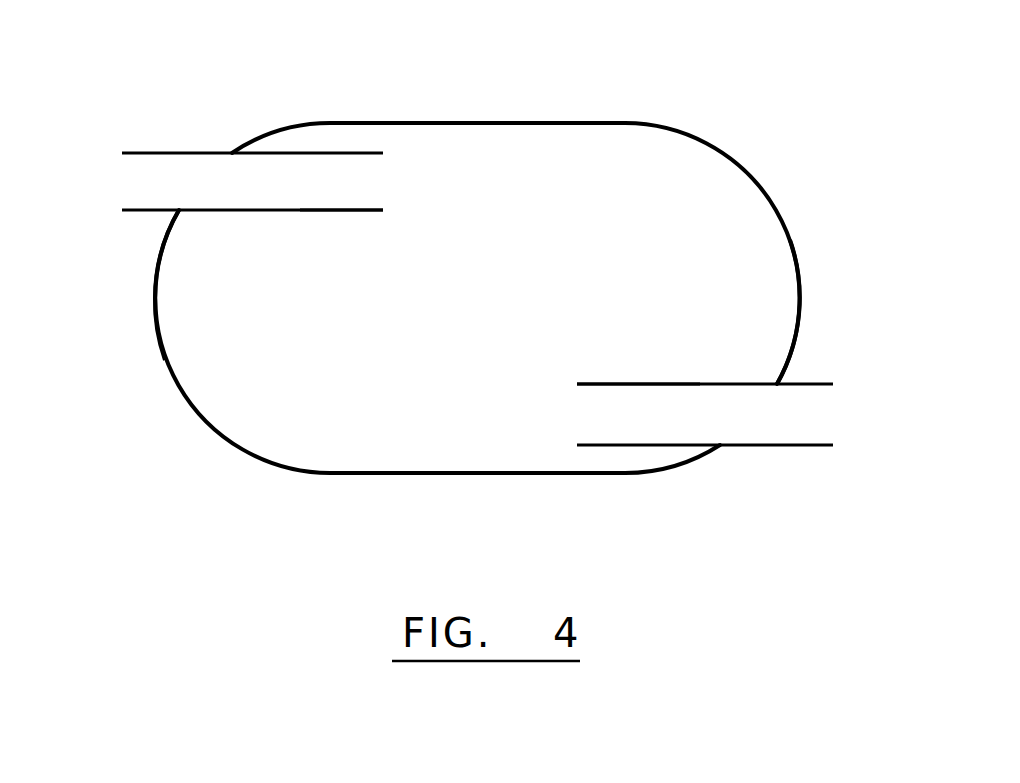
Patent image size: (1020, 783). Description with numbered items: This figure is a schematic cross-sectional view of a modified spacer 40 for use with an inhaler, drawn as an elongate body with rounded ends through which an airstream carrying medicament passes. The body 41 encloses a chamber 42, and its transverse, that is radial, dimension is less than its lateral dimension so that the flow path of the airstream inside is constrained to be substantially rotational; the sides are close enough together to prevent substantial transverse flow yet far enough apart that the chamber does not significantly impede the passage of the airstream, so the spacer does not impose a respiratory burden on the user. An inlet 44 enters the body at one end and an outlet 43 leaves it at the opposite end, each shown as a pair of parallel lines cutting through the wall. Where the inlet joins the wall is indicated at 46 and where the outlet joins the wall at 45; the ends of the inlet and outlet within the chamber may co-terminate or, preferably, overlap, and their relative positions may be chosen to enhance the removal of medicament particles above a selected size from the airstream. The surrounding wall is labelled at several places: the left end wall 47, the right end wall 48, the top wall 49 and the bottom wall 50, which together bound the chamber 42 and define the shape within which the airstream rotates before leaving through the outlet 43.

The fluid accumulator / vessel 40 is at (752, 157).
The vessel body wall 41 is at (153, 312).
The interior chamber 42 is at (675, 227).
The outlet pipe 43 is at (785, 447).
The inlet pipe 44 is at (175, 152).
The pipe junction (outlet) 45 is at (638, 383).
The pipe junction (inlet) 46 is at (335, 211).
The left end wall 47 is at (162, 275).
The right end wall 48 is at (800, 306).
The top wall 49 is at (505, 125).
The bottom wall 50 is at (455, 470).